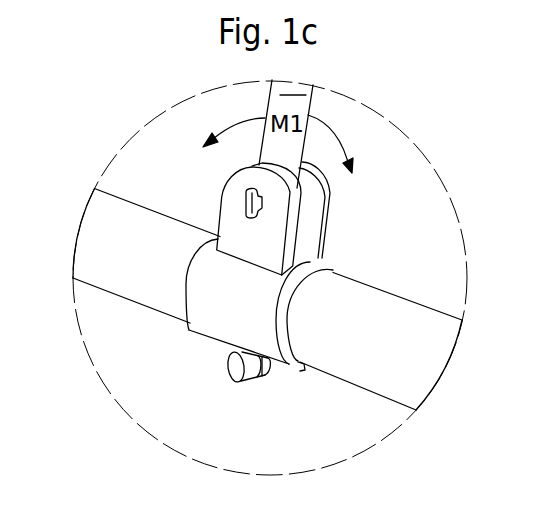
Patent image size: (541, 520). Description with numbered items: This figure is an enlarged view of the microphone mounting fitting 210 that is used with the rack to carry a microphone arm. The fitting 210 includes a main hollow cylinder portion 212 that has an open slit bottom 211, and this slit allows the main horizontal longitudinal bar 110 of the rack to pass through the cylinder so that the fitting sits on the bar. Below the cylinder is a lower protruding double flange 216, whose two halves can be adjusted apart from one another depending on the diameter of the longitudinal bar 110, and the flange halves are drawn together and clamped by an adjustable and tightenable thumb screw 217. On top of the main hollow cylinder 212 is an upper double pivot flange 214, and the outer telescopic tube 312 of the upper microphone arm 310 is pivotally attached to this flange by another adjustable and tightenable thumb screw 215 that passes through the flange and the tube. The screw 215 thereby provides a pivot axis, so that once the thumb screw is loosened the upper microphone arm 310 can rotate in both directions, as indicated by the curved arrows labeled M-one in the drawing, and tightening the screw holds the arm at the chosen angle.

The main horizontal longitudinal bar 110 is at (343, 310).
The microphone mounting fitting 210 is at (142, 317).
The open slit bottom 211 is at (302, 370).
The main hollow cylinder portion 212 is at (225, 298).
The upper double pivot flange 214 is at (291, 243).
The thumb screw 215 is at (250, 210).
The lower protruding double flange 216 is at (253, 363).
The thumb screw 217 is at (243, 383).
The upper microphone arm 310 is at (293, 83).
The outer telescopic tube 312 is at (292, 103).